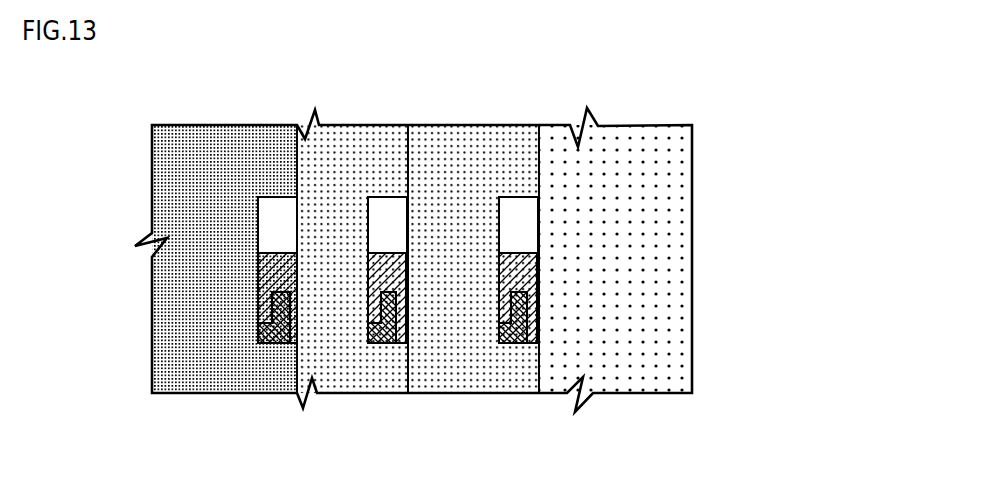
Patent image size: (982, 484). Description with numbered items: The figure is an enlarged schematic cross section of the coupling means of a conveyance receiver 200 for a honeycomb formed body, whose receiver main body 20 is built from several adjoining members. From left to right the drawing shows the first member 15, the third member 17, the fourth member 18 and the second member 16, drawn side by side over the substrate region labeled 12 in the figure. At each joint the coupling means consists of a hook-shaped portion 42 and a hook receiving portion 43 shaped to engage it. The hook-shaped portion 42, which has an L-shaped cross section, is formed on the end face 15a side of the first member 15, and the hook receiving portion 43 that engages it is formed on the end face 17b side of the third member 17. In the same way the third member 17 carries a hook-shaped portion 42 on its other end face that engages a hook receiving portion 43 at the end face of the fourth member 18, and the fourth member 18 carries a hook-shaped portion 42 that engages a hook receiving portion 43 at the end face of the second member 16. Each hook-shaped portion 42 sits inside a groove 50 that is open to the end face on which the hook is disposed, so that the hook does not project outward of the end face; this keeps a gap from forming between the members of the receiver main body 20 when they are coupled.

The first member 15 is at (203, 373).
The end face 15a is at (298, 363).
The third member 17 is at (362, 373).
The end face 17b is at (297, 150).
The fourth member 18 is at (463, 382).
The second member 16 is at (652, 383).
The semiconductor substrate 12 is at (693, 310).
The receiver main body 20 is at (704, 366).
The conveyance receiver 200 is at (717, 94).
The groove 50 is at (267, 212).
The hook receiving portion 43 is at (388, 262).
The hook-shaped portion 42 is at (275, 345).